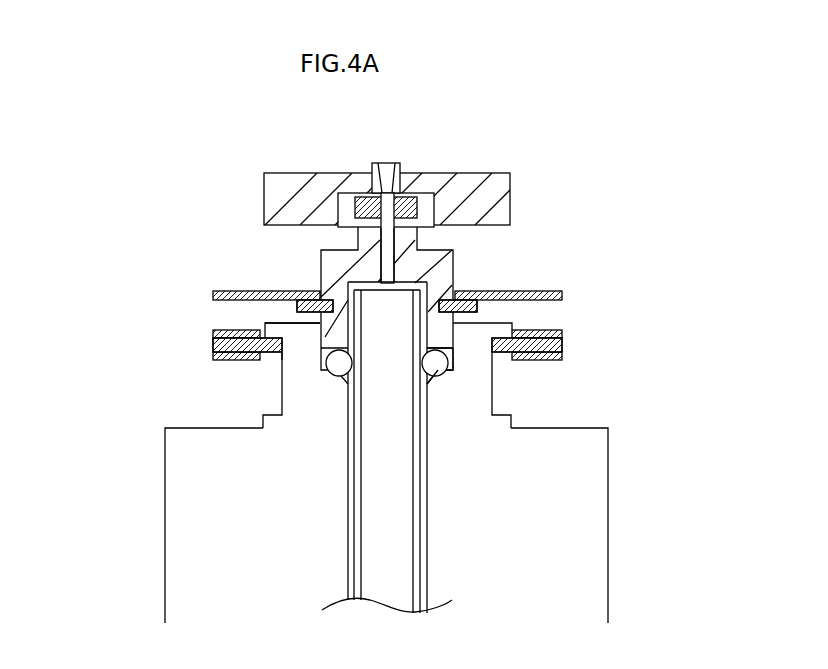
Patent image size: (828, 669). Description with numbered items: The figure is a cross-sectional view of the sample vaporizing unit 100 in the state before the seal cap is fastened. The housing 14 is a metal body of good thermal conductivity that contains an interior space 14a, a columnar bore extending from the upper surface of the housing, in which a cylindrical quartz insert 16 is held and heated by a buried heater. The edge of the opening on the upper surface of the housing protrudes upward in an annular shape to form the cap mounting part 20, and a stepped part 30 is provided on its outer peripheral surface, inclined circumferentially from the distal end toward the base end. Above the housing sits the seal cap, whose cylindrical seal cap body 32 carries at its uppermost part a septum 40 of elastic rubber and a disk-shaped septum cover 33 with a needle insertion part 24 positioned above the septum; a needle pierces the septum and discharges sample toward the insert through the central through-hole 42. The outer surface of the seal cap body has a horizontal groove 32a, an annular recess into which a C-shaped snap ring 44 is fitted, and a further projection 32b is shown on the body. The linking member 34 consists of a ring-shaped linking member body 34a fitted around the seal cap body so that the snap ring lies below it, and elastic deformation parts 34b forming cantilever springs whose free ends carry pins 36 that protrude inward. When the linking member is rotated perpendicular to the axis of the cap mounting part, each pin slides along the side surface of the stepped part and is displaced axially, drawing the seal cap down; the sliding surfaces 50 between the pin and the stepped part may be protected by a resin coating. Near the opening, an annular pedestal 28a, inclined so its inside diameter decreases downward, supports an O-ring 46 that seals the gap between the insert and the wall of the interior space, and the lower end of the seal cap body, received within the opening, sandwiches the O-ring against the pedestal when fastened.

The sensor attachment structure 100 is at (222, 190).
The housing 14 is at (608, 508).
The interior space 14a is at (427, 542).
The insert 16 is at (405, 455).
The cap mounting part 20 is at (297, 383).
The needle insertion part 24 is at (402, 165).
The pedestal 28a is at (432, 382).
The stepped part 30 is at (265, 323).
The seal cap body 32 is at (453, 255).
The horizontal groove 32a is at (428, 345).
The projection of holder 32b is at (478, 305).
The septum cover 33 is at (502, 185).
The linking member 34 is at (112, 284).
The linking member body 34a is at (212, 297).
The elastic deformation part 34b is at (212, 333).
The pin 36 is at (212, 352).
The septum 40 is at (367, 205).
The through-hole 42 is at (386, 265).
The C-shaped snap ring 44 is at (495, 291).
The O-ring 46 is at (447, 367).
The sliding surfaces 50 is at (282, 353).